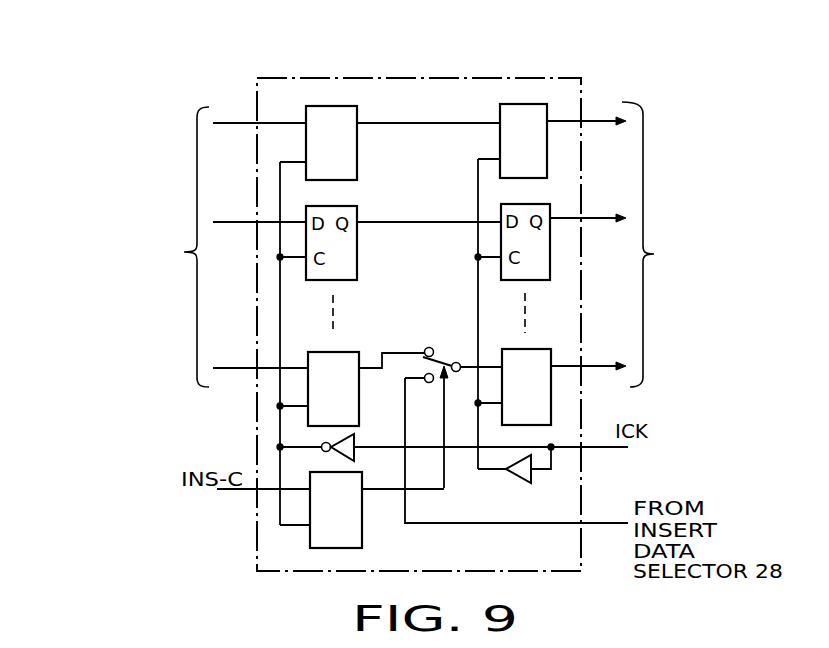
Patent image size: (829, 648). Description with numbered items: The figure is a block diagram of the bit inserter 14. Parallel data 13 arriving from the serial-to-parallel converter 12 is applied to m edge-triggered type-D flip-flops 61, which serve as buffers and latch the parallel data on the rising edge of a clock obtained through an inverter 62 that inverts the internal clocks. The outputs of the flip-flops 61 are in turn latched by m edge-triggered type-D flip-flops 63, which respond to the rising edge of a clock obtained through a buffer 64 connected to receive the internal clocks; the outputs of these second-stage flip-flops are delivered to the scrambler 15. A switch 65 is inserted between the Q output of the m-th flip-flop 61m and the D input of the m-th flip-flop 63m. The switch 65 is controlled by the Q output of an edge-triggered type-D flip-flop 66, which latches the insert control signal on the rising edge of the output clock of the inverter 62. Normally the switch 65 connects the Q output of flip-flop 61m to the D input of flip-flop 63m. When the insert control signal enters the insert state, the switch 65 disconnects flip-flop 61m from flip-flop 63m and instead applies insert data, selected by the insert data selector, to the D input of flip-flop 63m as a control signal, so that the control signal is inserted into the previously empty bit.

The serial-to-parallel converter 12 is at (127, 247).
The parallel data 13 is at (232, 123).
The bit inserter 14 is at (418, 78).
The scrambler 15 is at (709, 244).
The edge-triggered type-D flip-flops 61 is at (358, 155).
The m-th flip-flop 61m is at (354, 352).
The inverter 62 is at (355, 436).
The edge-triggered type-D flip-flops 63 is at (500, 107).
The m-th flip-flop 63m is at (540, 349).
The buffer 64 is at (512, 482).
The switch 65 is at (435, 349).
The edge-triggered type-D flip-flop 66 is at (363, 537).